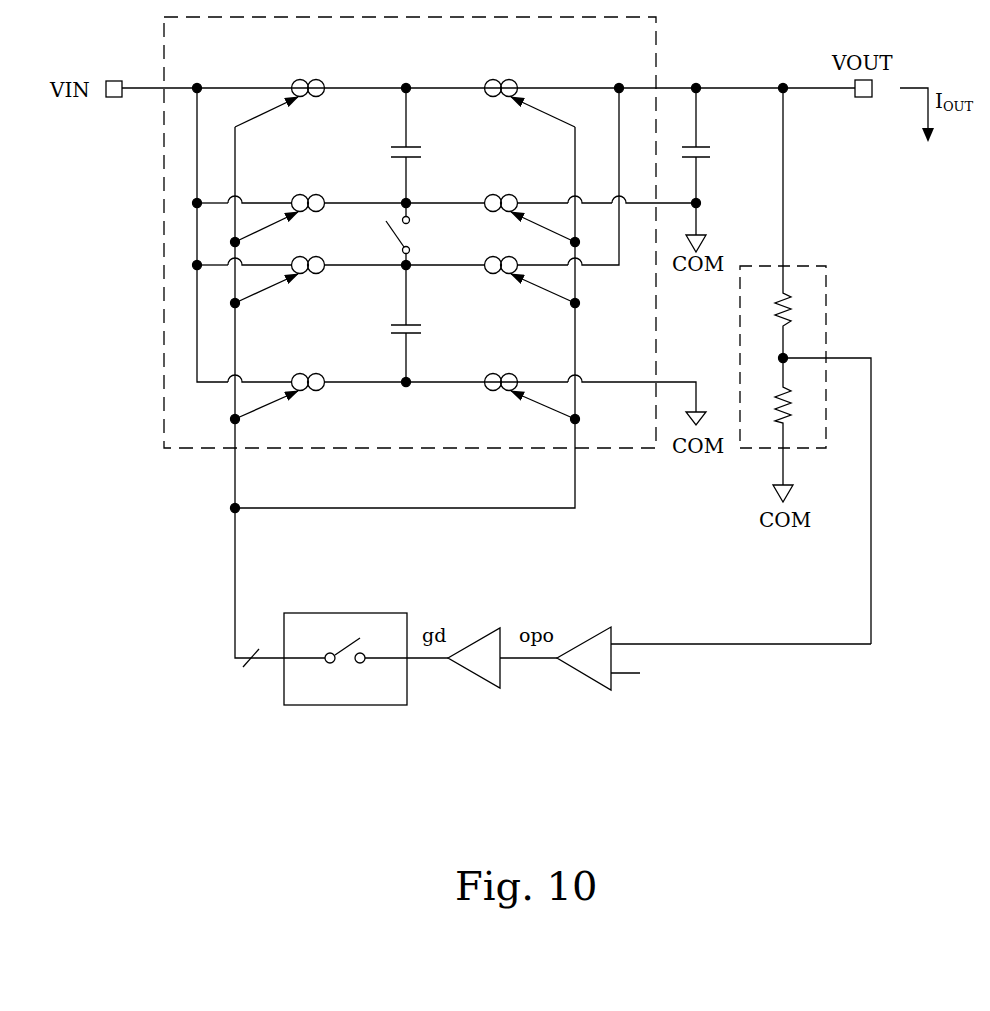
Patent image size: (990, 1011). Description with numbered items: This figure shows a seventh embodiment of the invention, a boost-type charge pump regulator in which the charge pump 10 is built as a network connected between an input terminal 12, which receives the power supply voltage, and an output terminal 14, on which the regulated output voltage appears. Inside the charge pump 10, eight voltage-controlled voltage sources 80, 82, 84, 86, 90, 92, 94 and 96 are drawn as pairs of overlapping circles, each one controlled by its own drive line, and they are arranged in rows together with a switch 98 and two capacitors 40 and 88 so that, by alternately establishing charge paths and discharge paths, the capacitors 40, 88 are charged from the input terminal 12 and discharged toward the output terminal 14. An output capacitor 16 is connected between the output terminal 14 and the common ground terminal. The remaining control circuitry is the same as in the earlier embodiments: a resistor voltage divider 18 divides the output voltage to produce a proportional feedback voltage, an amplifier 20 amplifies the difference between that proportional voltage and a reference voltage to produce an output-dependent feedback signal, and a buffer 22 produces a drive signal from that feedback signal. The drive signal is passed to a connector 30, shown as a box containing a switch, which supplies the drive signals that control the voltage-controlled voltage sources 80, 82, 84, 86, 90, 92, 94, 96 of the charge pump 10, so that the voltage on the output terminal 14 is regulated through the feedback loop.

The charge pump 10 is at (164, 303).
The input terminal 12 is at (193, 92).
The output terminal 14 is at (860, 97).
The output capacitor 16 is at (705, 165).
The resistor voltage divider 18 is at (826, 333).
The amplifier 20 is at (580, 642).
The buffer 22 is at (472, 633).
The connector 30 is at (344, 613).
The capacitor 40 is at (418, 143).
The voltage-controlled voltage source 80 is at (305, 73).
The voltage-controlled voltage source 82 is at (505, 73).
The voltage-controlled voltage source 84 is at (505, 188).
The voltage-controlled voltage source 86 is at (305, 188).
The capacitor 88 is at (418, 320).
The voltage-controlled voltage source 90 is at (306, 366).
The voltage-controlled voltage source 92 is at (520, 368).
The voltage-controlled voltage source 94 is at (498, 250).
The voltage-controlled voltage source 96 is at (323, 277).
The switch 98 is at (386, 236).